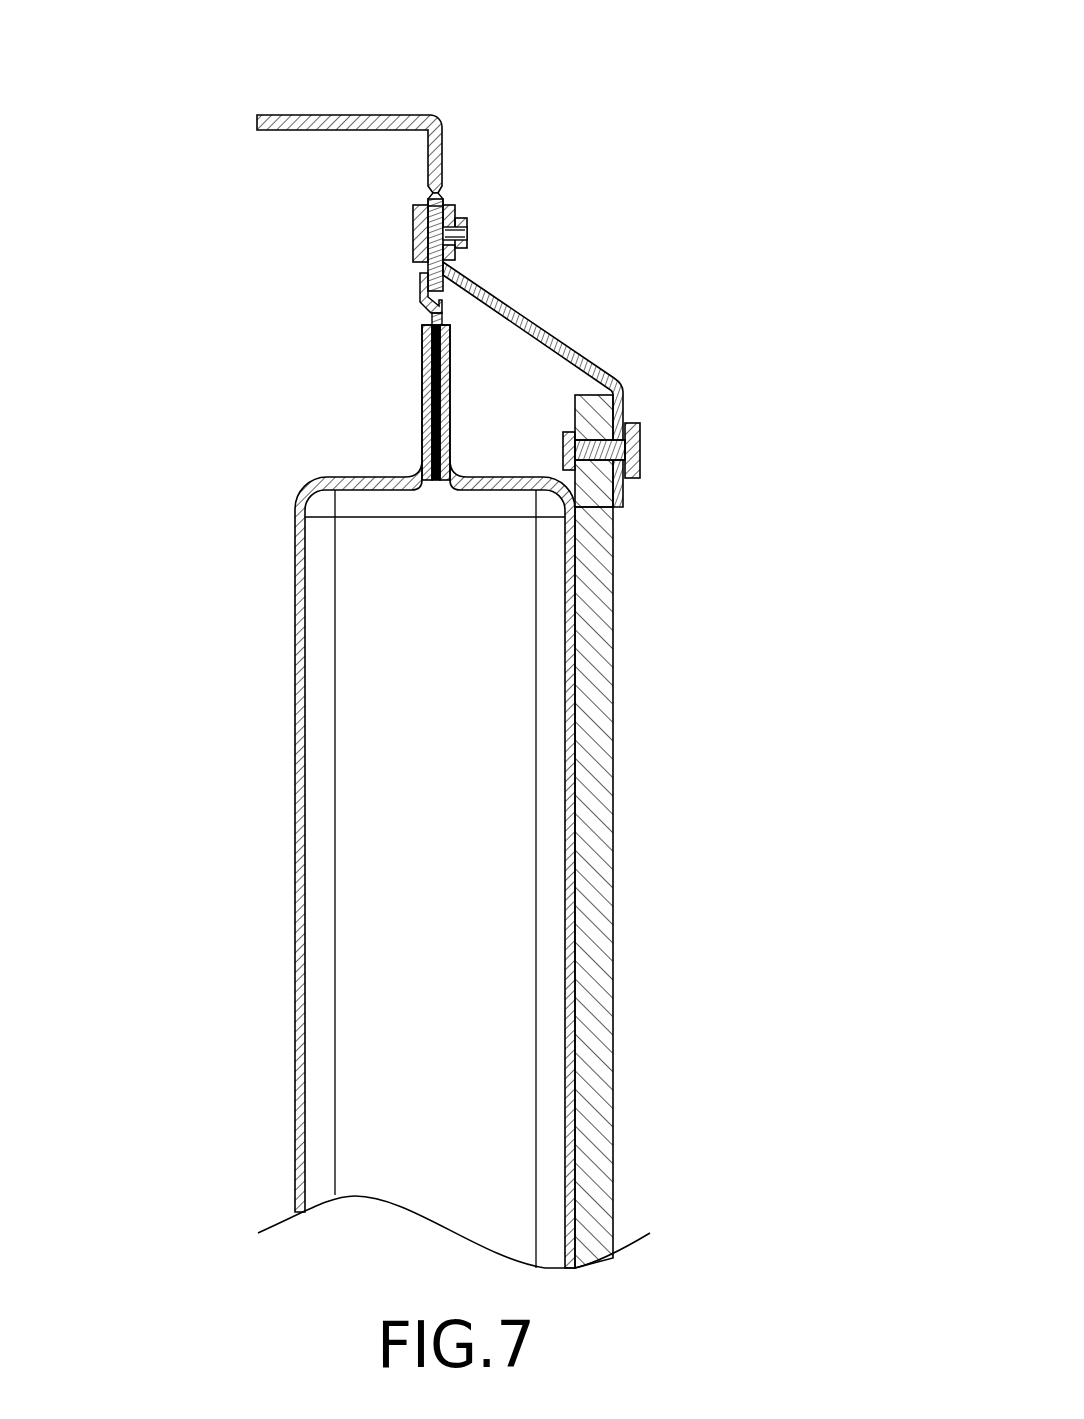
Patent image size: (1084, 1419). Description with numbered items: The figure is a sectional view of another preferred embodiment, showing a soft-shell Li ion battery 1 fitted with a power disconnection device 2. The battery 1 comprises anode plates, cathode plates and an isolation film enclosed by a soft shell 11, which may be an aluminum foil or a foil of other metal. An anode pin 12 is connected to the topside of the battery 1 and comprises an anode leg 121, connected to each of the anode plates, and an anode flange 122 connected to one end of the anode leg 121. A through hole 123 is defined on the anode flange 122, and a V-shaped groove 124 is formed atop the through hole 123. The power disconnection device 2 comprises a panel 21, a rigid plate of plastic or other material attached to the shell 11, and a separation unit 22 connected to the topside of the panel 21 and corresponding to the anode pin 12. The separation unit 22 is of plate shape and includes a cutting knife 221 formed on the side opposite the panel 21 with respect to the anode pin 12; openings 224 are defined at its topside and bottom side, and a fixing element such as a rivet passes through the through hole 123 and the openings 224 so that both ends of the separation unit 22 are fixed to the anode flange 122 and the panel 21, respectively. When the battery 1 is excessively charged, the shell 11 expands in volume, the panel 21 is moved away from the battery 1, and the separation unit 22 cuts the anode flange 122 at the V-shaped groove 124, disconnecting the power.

The soft-shell Li ion battery 1 is at (360, 462).
The soft shell 11 is at (572, 560).
The anode pin 12 is at (472, 126).
The anode leg 121 is at (430, 312).
The anode flange 122 is at (345, 126).
The through hole 123 is at (414, 243).
The V-shaped groove 124 is at (444, 193).
The power disconnection device 2 is at (636, 1102).
The panel 21 is at (597, 1012).
The separation unit 22 is at (578, 316).
The cutting knife 221 is at (600, 420).
The openings 224 is at (627, 420).